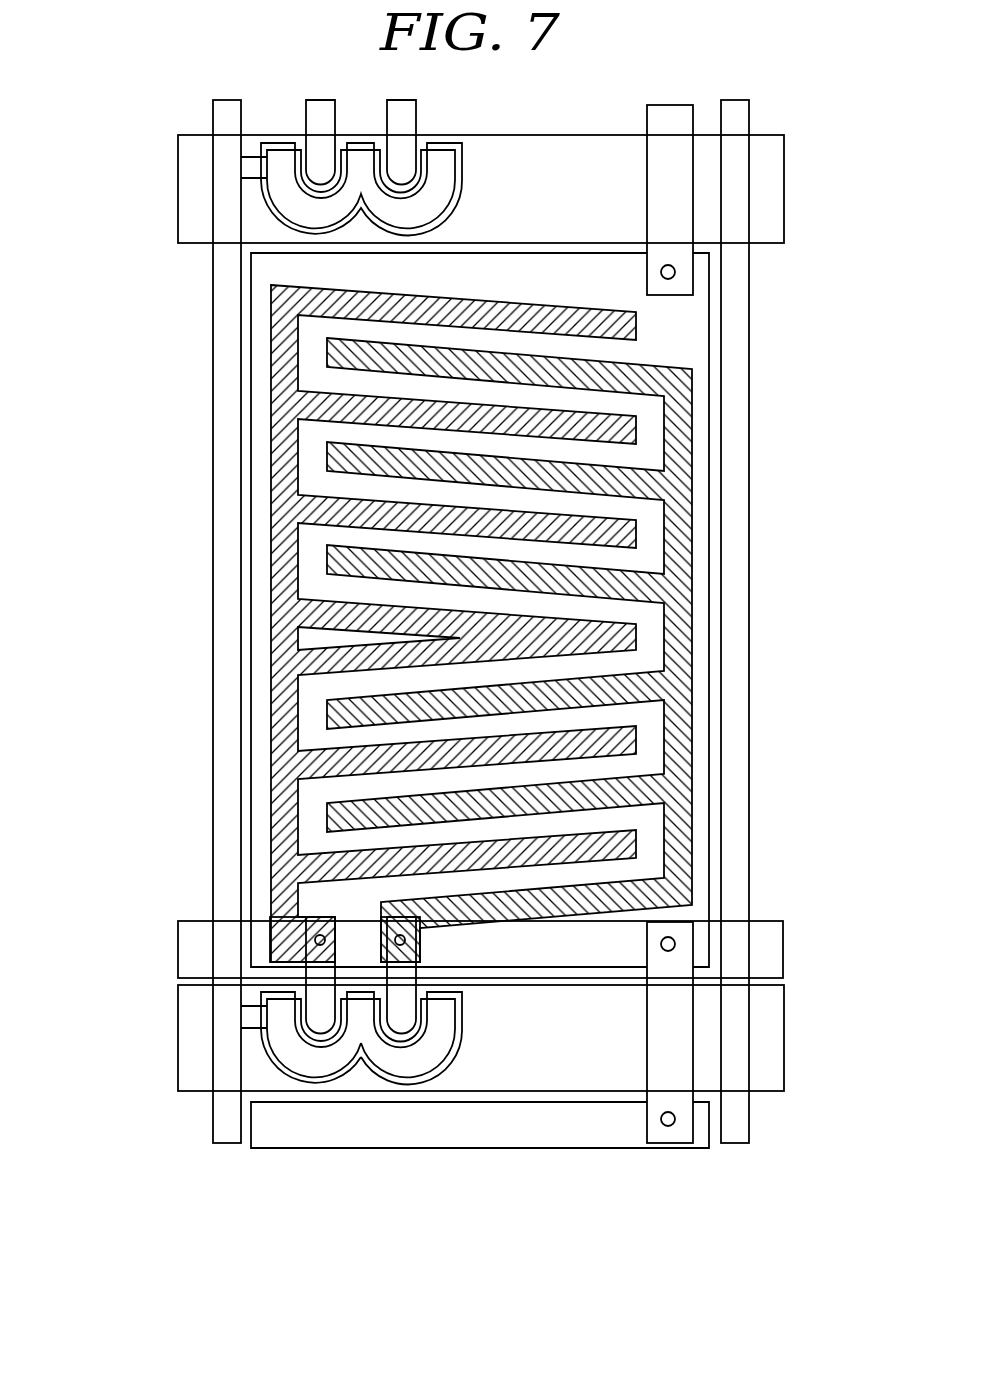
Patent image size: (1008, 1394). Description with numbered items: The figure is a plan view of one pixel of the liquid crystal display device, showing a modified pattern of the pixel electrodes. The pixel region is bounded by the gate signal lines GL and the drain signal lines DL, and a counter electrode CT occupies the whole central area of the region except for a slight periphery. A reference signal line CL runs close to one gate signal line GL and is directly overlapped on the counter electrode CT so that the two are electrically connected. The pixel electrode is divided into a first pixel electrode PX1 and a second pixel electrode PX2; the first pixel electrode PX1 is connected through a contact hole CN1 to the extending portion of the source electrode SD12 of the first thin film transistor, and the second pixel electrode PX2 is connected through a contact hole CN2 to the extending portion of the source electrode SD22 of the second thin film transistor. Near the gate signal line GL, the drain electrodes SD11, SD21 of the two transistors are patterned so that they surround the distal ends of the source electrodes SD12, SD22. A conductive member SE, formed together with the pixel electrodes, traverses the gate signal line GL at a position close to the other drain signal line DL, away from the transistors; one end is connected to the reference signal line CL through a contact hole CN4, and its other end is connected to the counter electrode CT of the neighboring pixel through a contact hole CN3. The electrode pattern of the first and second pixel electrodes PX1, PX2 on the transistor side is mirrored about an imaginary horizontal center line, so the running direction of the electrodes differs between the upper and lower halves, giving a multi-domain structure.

The gate signal line GL is at (185, 190).
The drain signal line DL is at (213, 715).
The conductive member SE is at (693, 1045).
The reference signal line CL is at (775, 950).
The counter electrode CT is at (253, 372).
The first pixel electrode PX1 is at (280, 455).
The second pixel electrode PX2 is at (680, 463).
The drain electrode of thin film transistor TFT1 SD11 is at (297, 1055).
The source electrode of thin film transistor TFT1 SD12 is at (318, 967).
The drain electrode of thin film transistor TFT2 SD21 is at (393, 1062).
The source electrode of thin film transistor TFT2 SD22 is at (410, 980).
The contact hole CN1 is at (317, 937).
The contact hole CN2 is at (405, 938).
The contact hole CN3 is at (670, 1126).
The contact hole CN4 is at (680, 943).